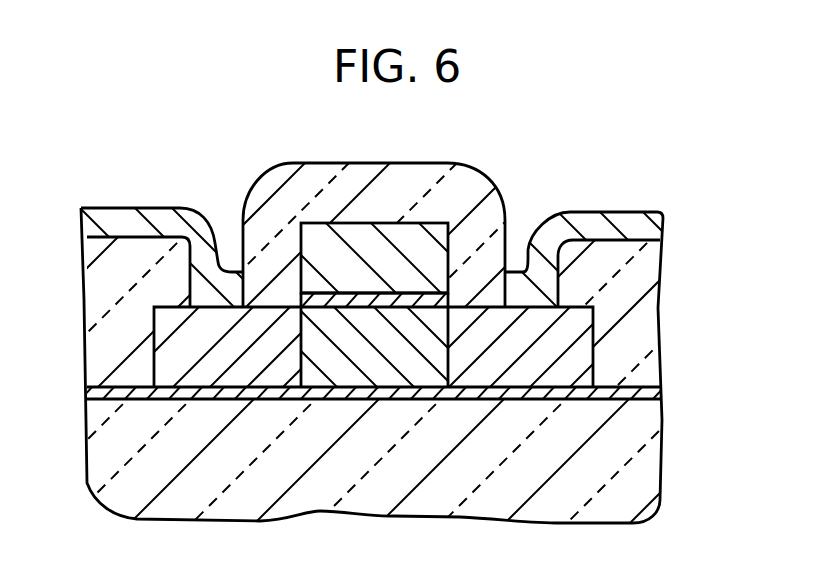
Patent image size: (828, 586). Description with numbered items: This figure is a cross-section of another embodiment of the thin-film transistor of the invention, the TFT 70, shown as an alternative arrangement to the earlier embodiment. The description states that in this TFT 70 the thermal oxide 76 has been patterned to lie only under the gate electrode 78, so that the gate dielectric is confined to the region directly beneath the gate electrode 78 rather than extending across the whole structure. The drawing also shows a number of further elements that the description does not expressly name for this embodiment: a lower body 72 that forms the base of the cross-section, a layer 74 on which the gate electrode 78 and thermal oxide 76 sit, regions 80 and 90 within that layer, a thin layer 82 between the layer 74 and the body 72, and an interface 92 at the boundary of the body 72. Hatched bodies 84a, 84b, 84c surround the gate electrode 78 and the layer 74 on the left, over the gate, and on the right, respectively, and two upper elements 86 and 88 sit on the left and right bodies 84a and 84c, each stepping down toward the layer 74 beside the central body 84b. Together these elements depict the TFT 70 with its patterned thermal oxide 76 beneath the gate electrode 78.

The TFT 70 is at (457, 163).
The substrate 72 is at (636, 481).
The semiconductor layer / drain region 74 is at (568, 360).
The thermal oxide 76 is at (401, 298).
The gate electrode 78 is at (358, 222).
The source region 80 is at (163, 352).
The buried insulating layer 82 is at (612, 393).
The insulating film (left portion) 84a is at (92, 302).
The insulating film (gate cover portion) 84b is at (430, 183).
The insulating film (right portion) 84c is at (598, 334).
The source electrode 86 is at (112, 218).
The drain electrode 88 is at (624, 226).
The channel region 90 is at (317, 372).
The interface between substrate and insulating layer 92 is at (640, 402).